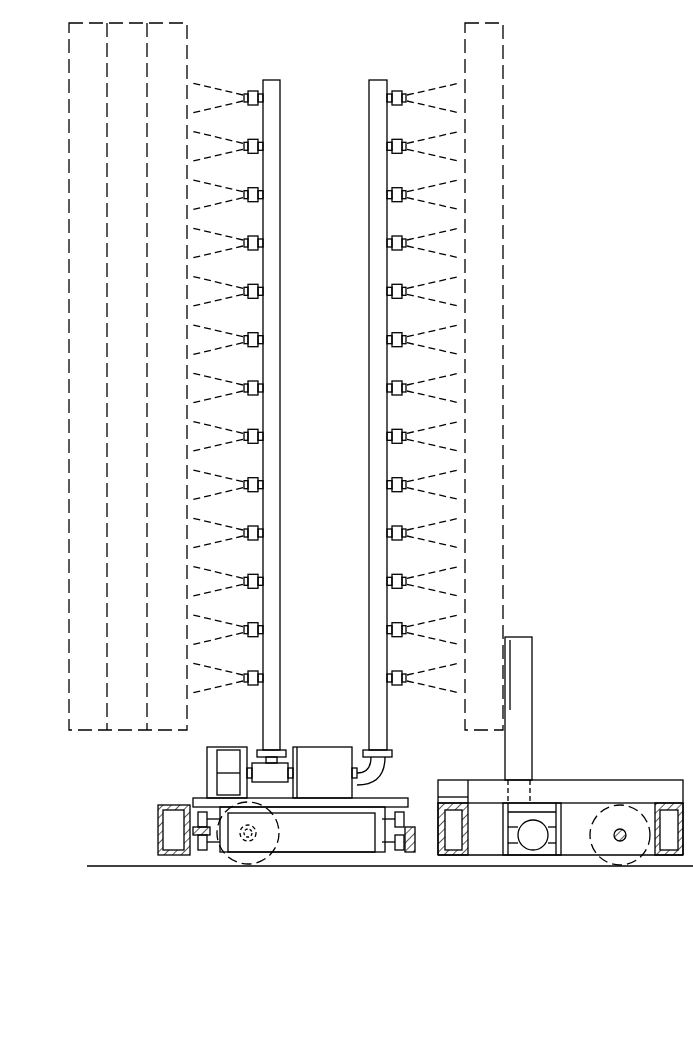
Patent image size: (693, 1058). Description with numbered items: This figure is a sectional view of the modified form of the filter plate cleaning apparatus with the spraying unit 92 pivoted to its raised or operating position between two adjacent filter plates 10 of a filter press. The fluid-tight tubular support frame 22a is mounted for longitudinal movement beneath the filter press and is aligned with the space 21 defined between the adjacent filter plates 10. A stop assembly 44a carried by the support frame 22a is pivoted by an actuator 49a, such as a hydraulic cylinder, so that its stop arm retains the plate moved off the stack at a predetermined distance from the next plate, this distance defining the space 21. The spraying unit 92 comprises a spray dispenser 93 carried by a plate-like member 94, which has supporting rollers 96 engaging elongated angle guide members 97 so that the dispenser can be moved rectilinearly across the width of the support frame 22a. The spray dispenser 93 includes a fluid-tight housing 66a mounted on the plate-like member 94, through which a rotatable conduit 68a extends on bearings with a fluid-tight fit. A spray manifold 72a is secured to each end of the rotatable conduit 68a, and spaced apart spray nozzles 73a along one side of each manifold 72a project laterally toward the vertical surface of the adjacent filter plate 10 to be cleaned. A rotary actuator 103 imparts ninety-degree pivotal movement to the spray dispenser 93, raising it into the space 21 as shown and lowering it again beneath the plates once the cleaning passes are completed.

The filter plate 10 is at (503, 202).
The space 21 is at (323, 64).
The spray manifold 72a is at (381, 199).
The spray nozzles 73a is at (396, 340).
The spray dispenser 93 is at (390, 741).
The rotatable conduit 68a is at (296, 772).
The fluid-tight housing 66a is at (328, 752).
The rotary actuator 103 is at (226, 755).
The spraying unit 92 is at (203, 762).
The tubular support frame 22a is at (158, 830).
The supporting rollers 96 is at (204, 852).
The angle guide members 97 is at (200, 852).
The plate-like member 94 is at (384, 803).
The stop assembly 44a is at (530, 702).
The actuator 49a is at (531, 843).